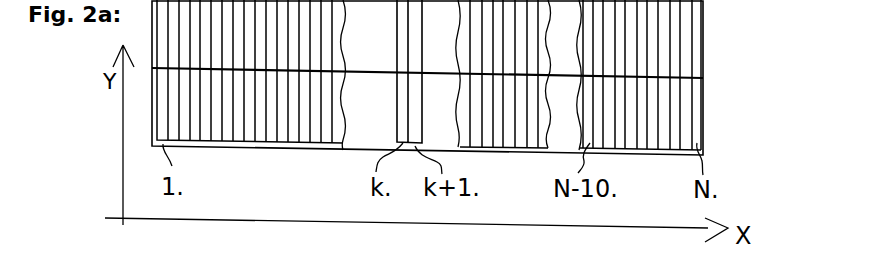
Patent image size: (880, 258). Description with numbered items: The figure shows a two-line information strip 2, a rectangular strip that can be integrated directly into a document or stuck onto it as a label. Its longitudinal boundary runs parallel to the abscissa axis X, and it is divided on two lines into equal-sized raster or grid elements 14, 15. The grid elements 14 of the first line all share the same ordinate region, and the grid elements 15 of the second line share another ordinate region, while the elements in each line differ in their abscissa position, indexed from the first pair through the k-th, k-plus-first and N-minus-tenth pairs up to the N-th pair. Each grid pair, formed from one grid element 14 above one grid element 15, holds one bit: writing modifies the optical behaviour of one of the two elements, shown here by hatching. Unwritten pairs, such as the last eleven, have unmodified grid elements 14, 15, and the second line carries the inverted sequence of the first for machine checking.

The information strip 2 is at (700, 70).
The grid element of the first line 14 is at (695, 45).
The grid element of the second line 15 is at (695, 112).